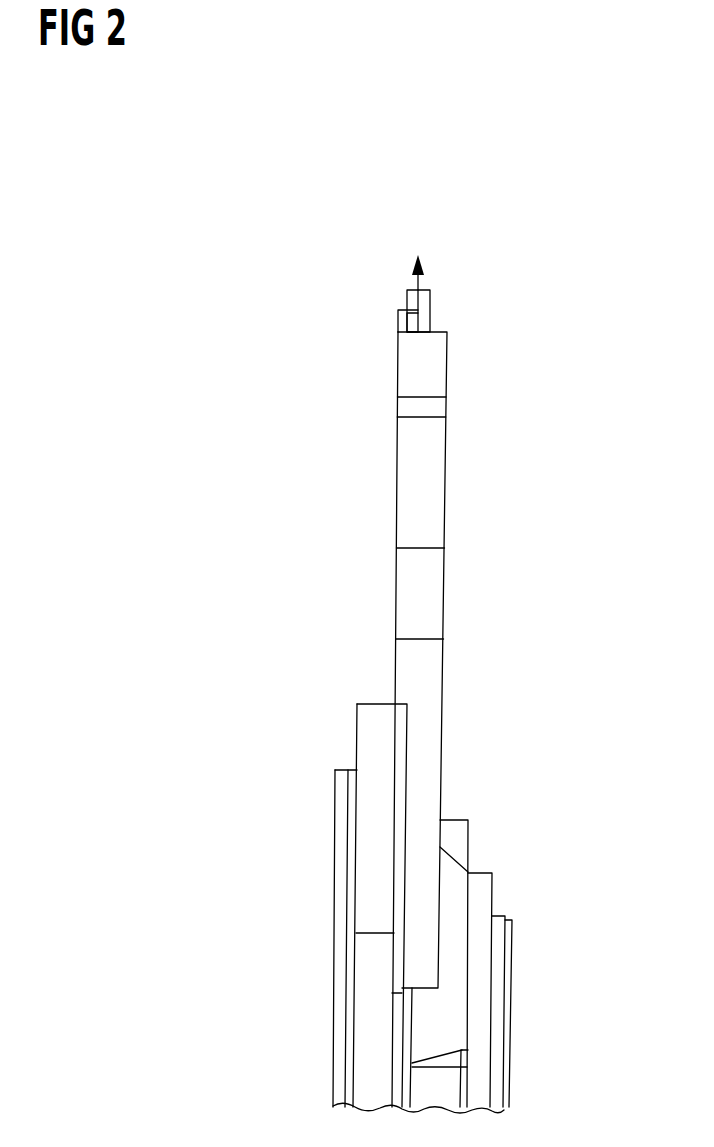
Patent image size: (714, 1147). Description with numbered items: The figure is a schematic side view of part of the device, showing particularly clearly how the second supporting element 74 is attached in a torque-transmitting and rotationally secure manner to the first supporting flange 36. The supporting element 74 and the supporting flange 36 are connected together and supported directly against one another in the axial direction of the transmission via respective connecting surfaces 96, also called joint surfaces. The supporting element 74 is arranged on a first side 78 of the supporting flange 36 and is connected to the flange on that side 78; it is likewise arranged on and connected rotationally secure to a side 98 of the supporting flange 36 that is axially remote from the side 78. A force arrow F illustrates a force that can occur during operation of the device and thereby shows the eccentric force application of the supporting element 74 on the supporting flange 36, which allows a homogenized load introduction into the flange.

The force arrow F is at (417, 284).
The second supporting element 74 is at (441, 364).
The connecting surfaces 96 is at (386, 857).
The first supporting flange 36 is at (346, 943).
The first side of the supporting flange 78 is at (255, 1016).
The side of the supporting flange remote from the first side 98 is at (525, 1001).